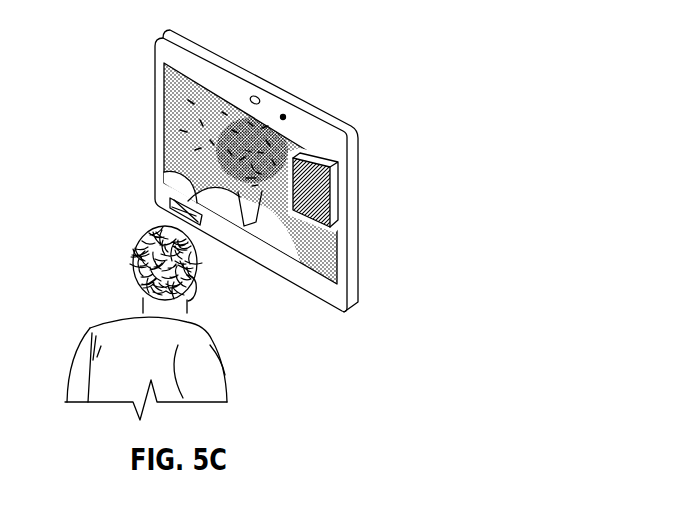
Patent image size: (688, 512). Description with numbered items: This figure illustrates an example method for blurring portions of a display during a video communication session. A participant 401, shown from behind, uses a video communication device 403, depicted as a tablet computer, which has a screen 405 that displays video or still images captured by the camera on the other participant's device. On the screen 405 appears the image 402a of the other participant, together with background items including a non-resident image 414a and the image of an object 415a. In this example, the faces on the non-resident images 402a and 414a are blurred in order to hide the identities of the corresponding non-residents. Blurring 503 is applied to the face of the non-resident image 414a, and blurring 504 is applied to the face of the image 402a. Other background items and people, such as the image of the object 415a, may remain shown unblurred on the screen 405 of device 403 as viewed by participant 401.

The participant 401 is at (112, 315).
The image of participant 402 402a is at (268, 207).
The video communication device 403 is at (140, 113).
The screen 405 is at (174, 92).
The non-resident image 414a is at (172, 198).
The image of object 415a is at (332, 192).
The blurring 503 is at (203, 102).
The blurring 504 is at (267, 130).